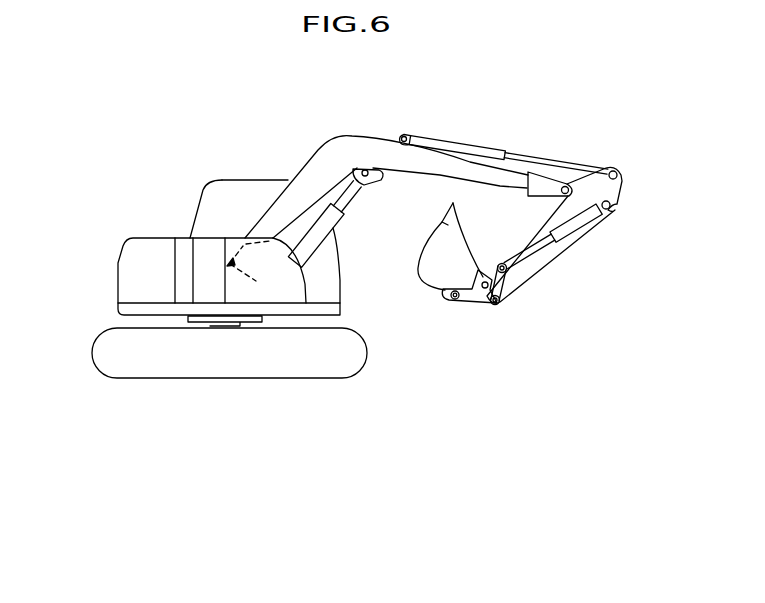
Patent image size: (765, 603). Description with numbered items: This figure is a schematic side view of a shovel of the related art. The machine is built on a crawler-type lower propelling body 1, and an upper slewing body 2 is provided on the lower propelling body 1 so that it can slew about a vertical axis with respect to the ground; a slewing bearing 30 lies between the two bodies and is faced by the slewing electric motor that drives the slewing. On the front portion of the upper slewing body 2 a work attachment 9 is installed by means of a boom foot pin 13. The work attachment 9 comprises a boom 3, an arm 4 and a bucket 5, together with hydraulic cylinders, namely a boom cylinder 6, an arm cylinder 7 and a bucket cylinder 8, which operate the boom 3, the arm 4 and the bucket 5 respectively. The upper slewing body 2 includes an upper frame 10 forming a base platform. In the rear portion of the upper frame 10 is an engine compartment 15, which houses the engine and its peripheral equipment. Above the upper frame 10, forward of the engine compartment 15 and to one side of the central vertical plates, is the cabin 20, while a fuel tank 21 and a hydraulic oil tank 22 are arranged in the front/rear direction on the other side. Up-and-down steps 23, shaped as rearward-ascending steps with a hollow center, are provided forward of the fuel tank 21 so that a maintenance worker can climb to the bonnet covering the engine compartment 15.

The lower propelling body 1 is at (229, 381).
The upper slewing body 2 is at (220, 178).
The boom 3 is at (318, 147).
The arm 4 is at (561, 220).
The bucket 5 is at (418, 264).
The boom cylinder 6 is at (356, 201).
The arm cylinder 7 is at (472, 144).
The bucket cylinder 8 is at (563, 263).
The work attachment 9 is at (433, 192).
The upper frame 10 is at (163, 318).
The boom foot pin 13 is at (256, 268).
The engine compartment 15 is at (176, 256).
The cabin 20 is at (243, 179).
The fuel tank 21 is at (222, 237).
The hydraulic oil tank 22 is at (176, 237).
The up-and-down steps 23 is at (309, 277).
The slewing bearing 30 is at (258, 320).